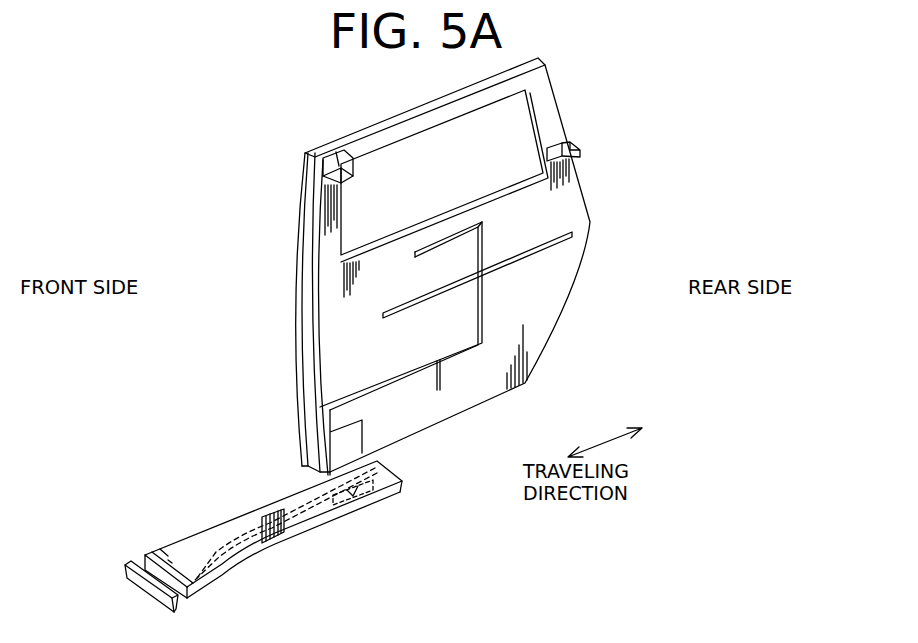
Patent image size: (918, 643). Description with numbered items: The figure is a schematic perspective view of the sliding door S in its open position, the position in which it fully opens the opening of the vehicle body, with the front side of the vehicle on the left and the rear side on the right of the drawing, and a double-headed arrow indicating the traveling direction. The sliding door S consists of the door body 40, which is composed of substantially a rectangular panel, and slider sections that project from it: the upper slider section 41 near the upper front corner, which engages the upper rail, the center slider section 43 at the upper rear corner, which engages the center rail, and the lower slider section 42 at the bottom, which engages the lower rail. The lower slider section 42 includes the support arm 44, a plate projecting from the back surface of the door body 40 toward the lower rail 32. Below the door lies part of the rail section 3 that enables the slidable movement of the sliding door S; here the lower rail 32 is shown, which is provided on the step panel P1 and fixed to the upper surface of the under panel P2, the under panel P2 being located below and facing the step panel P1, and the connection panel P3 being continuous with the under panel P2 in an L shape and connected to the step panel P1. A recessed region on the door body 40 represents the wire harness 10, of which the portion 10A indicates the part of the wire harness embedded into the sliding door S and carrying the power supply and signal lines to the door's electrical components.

The sliding door S is at (552, 91).
The door body 40 is at (547, 113).
The upper slider section 41 is at (348, 158).
The center slider section 43 is at (583, 149).
The wire harness 10 is at (483, 297).
The wire harness 10A is at (484, 328).
The lower slider section 42 is at (353, 478).
The rail section 3 is at (256, 535).
The lower rail 32 is at (297, 522).
The support arm 44 is at (377, 505).
The step panel P1 is at (170, 562).
The under panel P2 is at (200, 596).
The connection panel P3 is at (138, 576).